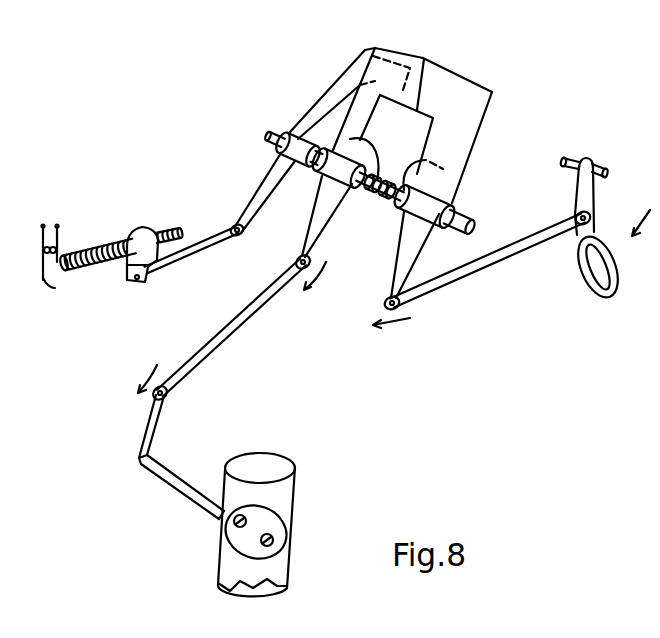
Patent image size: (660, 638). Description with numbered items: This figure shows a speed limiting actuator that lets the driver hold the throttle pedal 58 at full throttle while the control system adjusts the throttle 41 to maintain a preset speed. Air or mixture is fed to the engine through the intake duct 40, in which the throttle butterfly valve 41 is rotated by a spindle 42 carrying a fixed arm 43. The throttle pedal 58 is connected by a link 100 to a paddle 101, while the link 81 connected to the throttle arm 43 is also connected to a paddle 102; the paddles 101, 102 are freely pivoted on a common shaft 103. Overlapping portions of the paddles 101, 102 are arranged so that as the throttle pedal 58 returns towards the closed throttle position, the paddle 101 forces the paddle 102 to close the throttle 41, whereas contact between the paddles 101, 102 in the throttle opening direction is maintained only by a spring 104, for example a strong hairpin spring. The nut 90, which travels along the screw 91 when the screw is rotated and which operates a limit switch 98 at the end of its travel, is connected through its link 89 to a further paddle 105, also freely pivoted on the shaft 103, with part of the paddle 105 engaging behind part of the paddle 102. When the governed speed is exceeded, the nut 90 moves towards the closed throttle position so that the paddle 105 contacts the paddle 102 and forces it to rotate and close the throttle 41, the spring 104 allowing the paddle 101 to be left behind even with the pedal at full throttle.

The intake duct 40 is at (273, 462).
The throttle butterfly valve 41 is at (282, 537).
The spindle 42 is at (176, 490).
The arm 43 is at (146, 430).
The throttle pedal 58 is at (595, 239).
The link 81 is at (239, 327).
The link 89 is at (193, 251).
The nut 90 is at (150, 233).
The screw 91 is at (107, 263).
The limit switch 98 is at (61, 270).
The link 100 is at (496, 261).
The paddle 101 is at (480, 90).
The paddle 102 is at (397, 53).
The common shaft 103 is at (460, 222).
The spring 104 is at (420, 174).
The paddle 105 is at (347, 77).